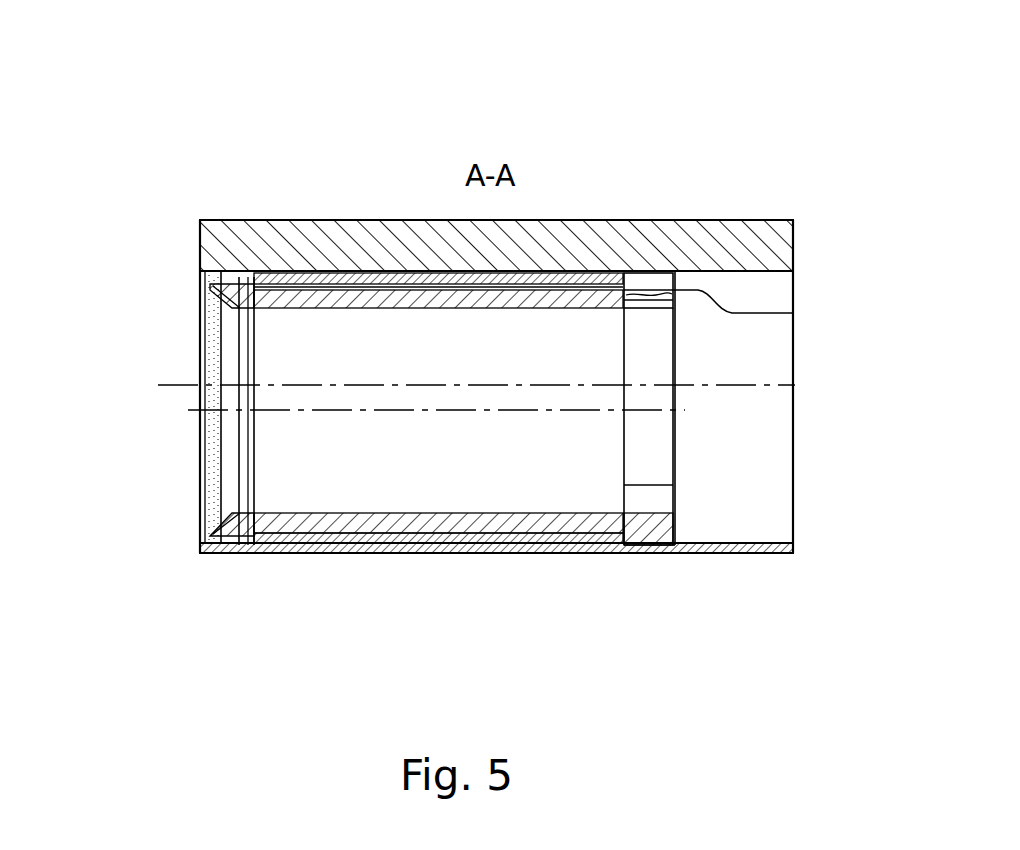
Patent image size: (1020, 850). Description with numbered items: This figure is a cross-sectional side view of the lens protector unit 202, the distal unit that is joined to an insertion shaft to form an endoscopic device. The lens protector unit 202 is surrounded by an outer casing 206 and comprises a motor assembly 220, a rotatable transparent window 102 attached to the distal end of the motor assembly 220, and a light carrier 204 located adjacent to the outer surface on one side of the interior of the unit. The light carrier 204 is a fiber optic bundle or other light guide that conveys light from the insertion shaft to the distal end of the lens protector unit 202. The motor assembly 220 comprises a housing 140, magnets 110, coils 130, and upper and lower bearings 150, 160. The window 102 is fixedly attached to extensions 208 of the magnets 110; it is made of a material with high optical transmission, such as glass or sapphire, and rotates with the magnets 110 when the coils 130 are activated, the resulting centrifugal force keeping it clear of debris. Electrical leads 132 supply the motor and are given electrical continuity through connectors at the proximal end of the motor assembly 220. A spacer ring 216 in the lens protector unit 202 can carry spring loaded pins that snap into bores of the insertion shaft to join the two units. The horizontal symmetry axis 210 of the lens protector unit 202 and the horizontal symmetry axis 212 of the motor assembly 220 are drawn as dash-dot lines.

The lens protector unit 202 is at (585, 90).
The light carrier 204 is at (577, 235).
The outer casing 206 is at (752, 553).
The housing 140 is at (630, 280).
The electrical leads 132 is at (793, 313).
The upper bearing 150 is at (207, 270).
The extensions 208 is at (215, 293).
The horizontal symmetry axis 210 is at (172, 385).
The horizontal symmetry axis of motor assembly 212 is at (187, 410).
The motor assembly 220 is at (110, 418).
The rotatable transparent window 102 is at (215, 497).
The magnets 110 is at (303, 522).
The coils 130 is at (348, 538).
The lower bearing 160 is at (632, 535).
The spacer ring 216 is at (650, 500).